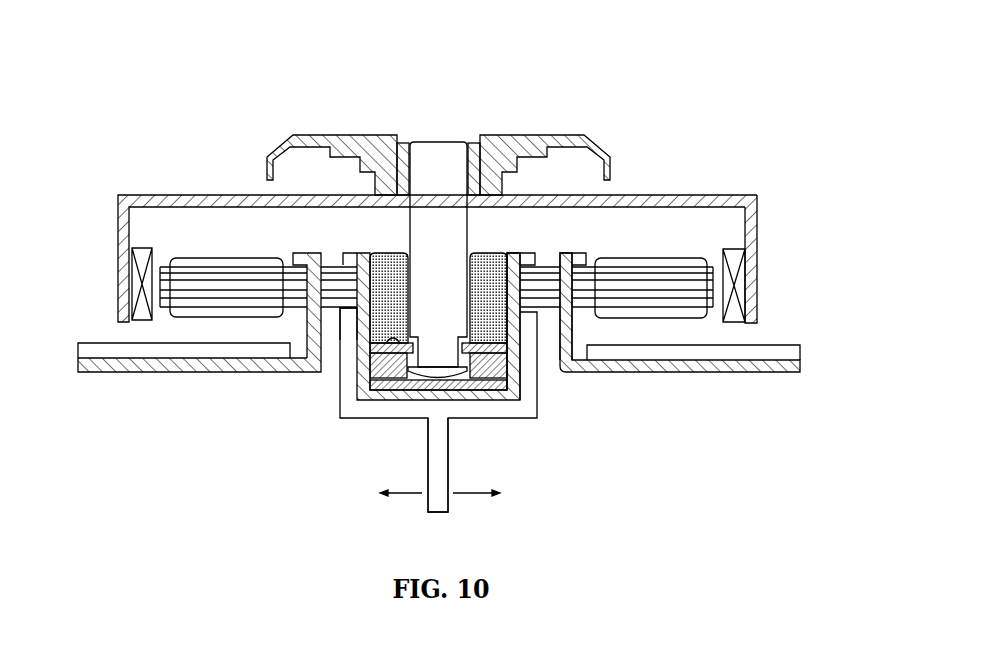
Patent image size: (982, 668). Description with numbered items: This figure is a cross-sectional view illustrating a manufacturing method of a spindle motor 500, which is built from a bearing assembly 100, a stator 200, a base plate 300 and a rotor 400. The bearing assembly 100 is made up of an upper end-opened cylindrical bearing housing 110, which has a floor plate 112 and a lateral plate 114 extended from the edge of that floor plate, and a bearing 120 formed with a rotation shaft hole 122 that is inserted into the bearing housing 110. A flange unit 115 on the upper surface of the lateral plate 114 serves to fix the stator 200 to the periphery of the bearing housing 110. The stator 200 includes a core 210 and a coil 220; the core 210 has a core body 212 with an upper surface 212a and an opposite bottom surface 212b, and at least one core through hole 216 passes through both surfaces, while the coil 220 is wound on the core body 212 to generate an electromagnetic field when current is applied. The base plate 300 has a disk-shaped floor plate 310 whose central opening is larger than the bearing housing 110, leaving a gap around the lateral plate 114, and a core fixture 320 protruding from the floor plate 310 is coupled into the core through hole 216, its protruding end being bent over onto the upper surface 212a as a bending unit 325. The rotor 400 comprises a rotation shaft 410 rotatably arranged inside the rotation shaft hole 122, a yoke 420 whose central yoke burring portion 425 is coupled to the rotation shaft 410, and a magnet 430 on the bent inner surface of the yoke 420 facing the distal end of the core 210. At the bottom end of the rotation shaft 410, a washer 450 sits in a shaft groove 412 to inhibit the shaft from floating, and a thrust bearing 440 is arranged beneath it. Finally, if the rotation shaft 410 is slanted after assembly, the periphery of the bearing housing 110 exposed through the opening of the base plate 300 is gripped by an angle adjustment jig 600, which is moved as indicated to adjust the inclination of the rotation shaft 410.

The bearing assembly 100 is at (433, 364).
The bearing housing 110 is at (465, 342).
The floor plate 112 is at (474, 393).
The lateral plate 114 is at (518, 360).
The flange unit 115 is at (527, 256).
The bearing 120 is at (492, 255).
The rotation shaft hole 122 is at (396, 253).
The stator 200 is at (680, 313).
The core 210 is at (485, 304).
The core body 212 is at (583, 308).
The upper surface 212a is at (333, 263).
The bottom surface 212b is at (340, 310).
The core through hole 216 is at (580, 290).
The coil 220 is at (684, 262).
The base plate 300 is at (199, 363).
The floor plate 310 is at (245, 372).
The core fixture 320 is at (307, 320).
The bending unit 325 is at (572, 257).
The rotor 400 is at (462, 230).
The rotation shaft 410 is at (437, 234).
The shaft groove 412 is at (427, 336).
The yoke 420 is at (757, 228).
The yoke burring portion 425 is at (479, 146).
The magnet 430 is at (738, 265).
The thrust bearing 440 is at (470, 393).
The washer 450 is at (392, 344).
The spindle motor 500 is at (590, 114).
The angle adjustment jig 600 is at (443, 503).